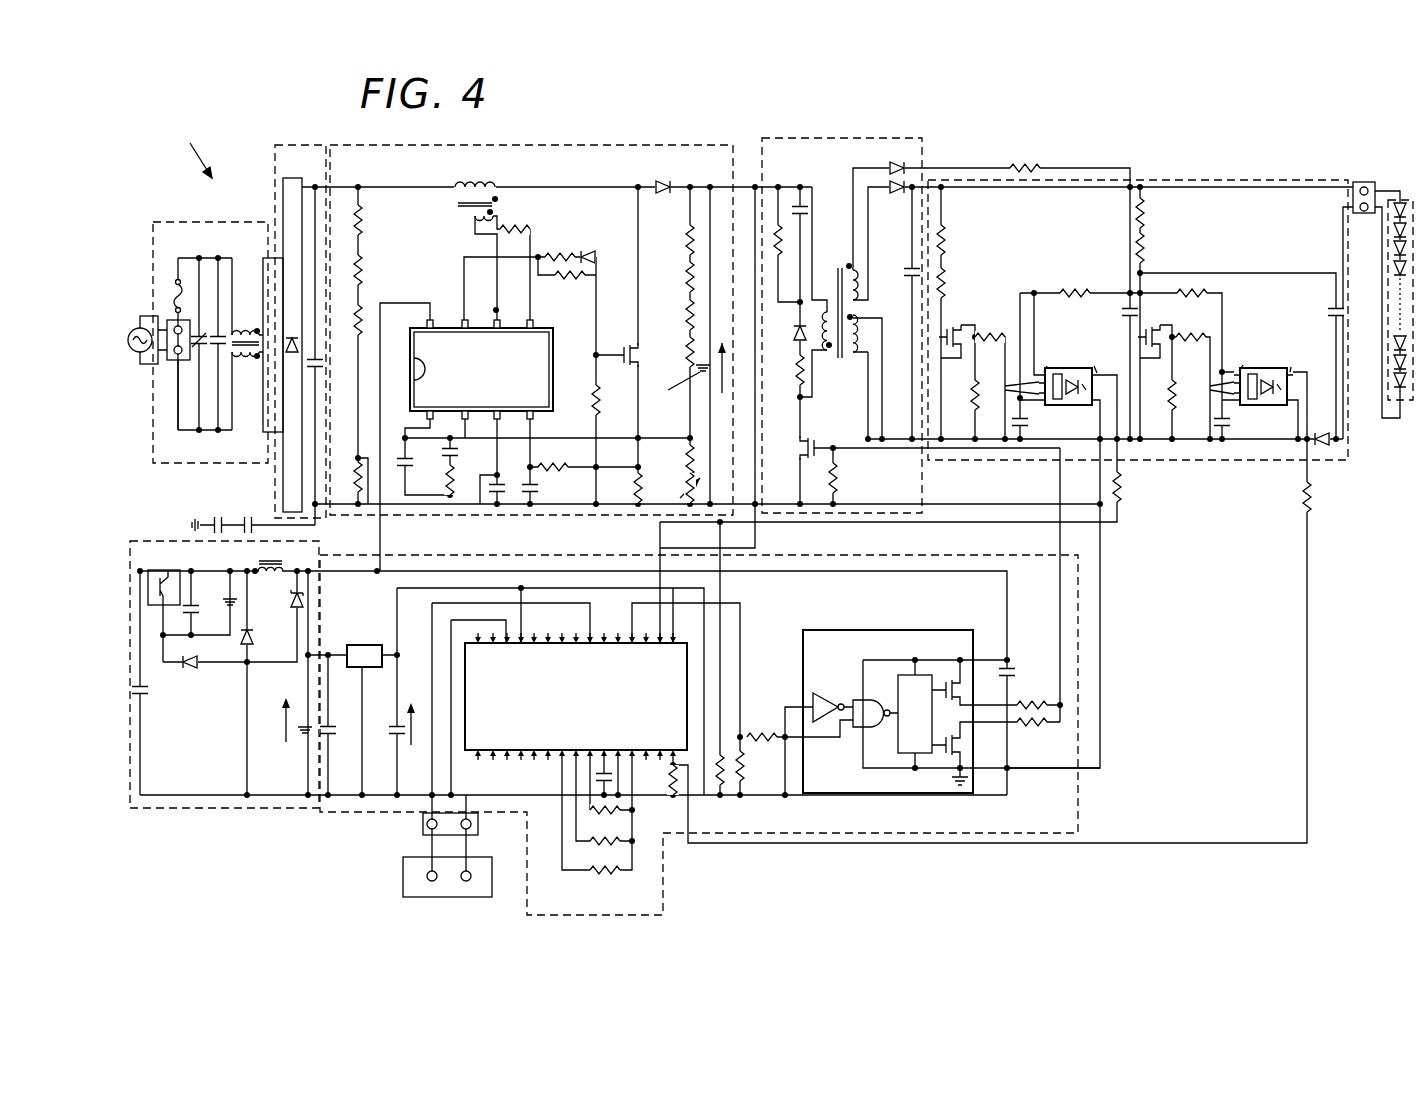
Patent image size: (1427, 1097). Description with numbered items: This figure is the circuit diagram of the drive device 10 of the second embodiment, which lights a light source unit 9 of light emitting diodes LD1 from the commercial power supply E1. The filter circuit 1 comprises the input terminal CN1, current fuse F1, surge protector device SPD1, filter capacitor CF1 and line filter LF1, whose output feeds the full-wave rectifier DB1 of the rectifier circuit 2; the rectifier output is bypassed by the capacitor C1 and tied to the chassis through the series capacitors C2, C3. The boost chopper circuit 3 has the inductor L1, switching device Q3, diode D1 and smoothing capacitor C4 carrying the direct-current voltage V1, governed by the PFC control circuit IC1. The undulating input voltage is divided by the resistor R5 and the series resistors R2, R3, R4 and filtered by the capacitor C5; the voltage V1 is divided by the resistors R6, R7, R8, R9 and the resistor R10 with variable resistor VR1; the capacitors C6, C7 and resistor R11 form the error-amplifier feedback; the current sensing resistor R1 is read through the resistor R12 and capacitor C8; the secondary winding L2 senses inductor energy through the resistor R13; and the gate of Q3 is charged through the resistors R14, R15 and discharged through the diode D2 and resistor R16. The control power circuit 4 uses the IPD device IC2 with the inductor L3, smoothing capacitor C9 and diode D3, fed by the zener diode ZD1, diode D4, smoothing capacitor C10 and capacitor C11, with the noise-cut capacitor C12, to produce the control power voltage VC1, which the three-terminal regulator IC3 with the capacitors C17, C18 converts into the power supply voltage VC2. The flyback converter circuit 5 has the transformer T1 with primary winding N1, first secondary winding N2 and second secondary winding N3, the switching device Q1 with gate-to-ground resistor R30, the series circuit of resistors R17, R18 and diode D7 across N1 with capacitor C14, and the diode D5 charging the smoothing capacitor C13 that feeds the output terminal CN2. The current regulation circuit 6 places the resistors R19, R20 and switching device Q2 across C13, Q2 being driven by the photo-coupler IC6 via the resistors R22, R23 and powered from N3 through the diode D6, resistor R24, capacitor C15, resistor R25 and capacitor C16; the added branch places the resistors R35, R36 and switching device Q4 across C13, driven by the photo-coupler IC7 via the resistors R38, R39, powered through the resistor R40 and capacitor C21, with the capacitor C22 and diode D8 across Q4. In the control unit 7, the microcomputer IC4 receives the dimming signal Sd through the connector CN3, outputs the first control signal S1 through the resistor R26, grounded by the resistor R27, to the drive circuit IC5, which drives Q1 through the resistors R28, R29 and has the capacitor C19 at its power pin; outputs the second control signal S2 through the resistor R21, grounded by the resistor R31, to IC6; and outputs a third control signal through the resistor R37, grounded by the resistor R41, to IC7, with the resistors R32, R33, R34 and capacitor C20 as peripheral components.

The semiconductor light emitting element drive device 10 is at (191, 150).
The filter circuit 1 is at (178, 222).
The rectifier circuit 2 is at (280, 178).
The boost chopper circuit 3 is at (731, 176).
The control power circuit 4 is at (152, 541).
The flyback converter circuit 5 is at (923, 155).
The current regulation circuit 6 is at (1190, 178).
The control unit 7 is at (920, 557).
The light source unit 9 is at (1385, 284).
The surge protector device SPD1 is at (205, 292).
The current fuse F1 is at (167, 294).
The commercial power supply E1 is at (143, 352).
The input terminal CN1 is at (183, 391).
The filter capacitor CF1 is at (218, 399).
The line filter LF1 is at (246, 360).
The full-wave rectifier DB1 is at (289, 335).
The capacitor C1 is at (329, 366).
The capacitor C2 is at (249, 517).
The capacitor C3 is at (217, 517).
The resistor R2 is at (347, 220).
The resistor R3 is at (347, 270).
The resistor R4 is at (347, 320).
The resistor R5 is at (347, 477).
The inductor L1 is at (475, 186).
The secondary winding L2 is at (472, 227).
The resistor R13 is at (518, 220).
The resistor R16 is at (555, 249).
The diode D2 is at (587, 250).
The resistor R14 is at (569, 285).
The diode D1 is at (661, 179).
The resistor R6 is at (678, 240).
The resistor R7 is at (678, 277).
The resistor R8 is at (678, 315).
The resistor R9 is at (678, 352).
The smoothing capacitor C4 is at (682, 384).
The direct-current voltage V1 is at (739, 373).
The resistor R10 is at (674, 460).
The variable resistor VR1 is at (672, 488).
The current sensing resistor R1 is at (628, 488).
The resistor R12 is at (555, 459).
The capacitor C8 is at (541, 491).
The capacitor C5 is at (505, 480).
The resistor R15 is at (612, 400).
The switching device Q3 is at (618, 350).
The capacitor C6 is at (398, 477).
The capacitor C7 is at (439, 459).
The resistor R11 is at (433, 480).
The PFC control circuit IC1 is at (481, 369).
The capacitor C14 is at (808, 210).
The resistor R18 is at (788, 242).
The diode D7 is at (790, 334).
The resistor R17 is at (786, 370).
The switching device Q1 is at (796, 448).
The resistor R30 is at (852, 478).
The primary winding N1 is at (823, 320).
The first secondary winding N2 is at (864, 333).
The second secondary winding N3 is at (842, 275).
The transformer T1 is at (839, 381).
The diode D6 is at (896, 160).
The diode D5 is at (897, 199).
The smoothing capacitor C13 is at (896, 273).
The resistor R24 is at (1024, 160).
The resistor R19 is at (959, 240).
The resistor R20 is at (959, 283).
The switching device Q2 is at (954, 352).
The resistor R22 is at (991, 328).
The resistor R23 is at (961, 406).
The photo-coupler IC6 is at (1068, 368).
The capacitor C16 is at (1018, 432).
The resistor R25 is at (1077, 285).
The capacitor C15 is at (1116, 315).
The resistor R35 is at (1158, 213).
The resistor R36 is at (1158, 248).
The resistor R40 is at (1191, 301).
The switching device Q4 is at (1154, 351).
The resistor R38 is at (1193, 328).
The resistor R39 is at (1159, 406).
The photo-coupler IC7 is at (1270, 368).
The capacitor C22 is at (1317, 302).
The capacitor C21 is at (1224, 432).
The diode D8 is at (1323, 428).
The resistor R37 is at (1290, 497).
The resistor R21 is at (1132, 487).
The output terminal CN2 is at (1366, 211).
The light emitting diode LD1 is at (1388, 338).
The IPD device IC2 is at (164, 577).
The smoothing capacitor C10 is at (205, 597).
The capacitor C11 is at (214, 618).
The inductor L3 is at (270, 581).
The zener diode ZD1 is at (285, 607).
The diode D3 is at (259, 641).
The diode D4 is at (189, 674).
The capacitor C12 is at (154, 701).
The control power voltage VC1 is at (272, 728).
The smoothing capacitor C9 is at (300, 743).
The 3-terminal regulator IC3 is at (365, 656).
The capacitor C17 is at (341, 720).
The capacitor C18 is at (386, 737).
The power supply voltage VC2 is at (414, 768).
The first control signal S1 is at (632, 620).
The second control signal S2 is at (660, 533).
The microcomputer IC4 is at (576, 696).
The capacitor C20 is at (598, 777).
The resistor R41 is at (662, 780).
The resistor R34 is at (607, 820).
The resistor R33 is at (604, 850).
The resistor R32 is at (604, 880).
The connector CN3 is at (469, 827).
The dimming signal Sd is at (425, 852).
The resistor R31 is at (721, 785).
The resistor R26 is at (760, 727).
The resistor R27 is at (755, 766).
The drive circuit IC5 is at (888, 711).
The capacitor C19 is at (1022, 665).
The resistor R29 is at (1034, 697).
The resistor R28 is at (1034, 736).